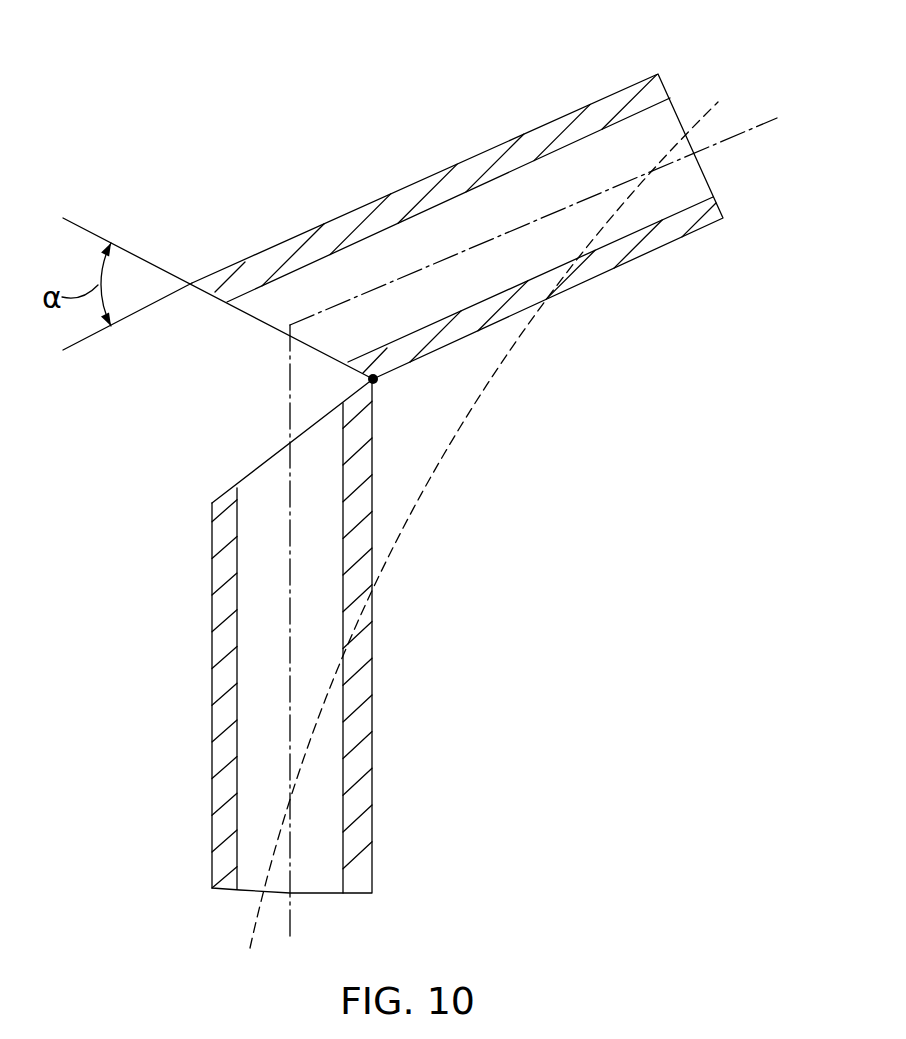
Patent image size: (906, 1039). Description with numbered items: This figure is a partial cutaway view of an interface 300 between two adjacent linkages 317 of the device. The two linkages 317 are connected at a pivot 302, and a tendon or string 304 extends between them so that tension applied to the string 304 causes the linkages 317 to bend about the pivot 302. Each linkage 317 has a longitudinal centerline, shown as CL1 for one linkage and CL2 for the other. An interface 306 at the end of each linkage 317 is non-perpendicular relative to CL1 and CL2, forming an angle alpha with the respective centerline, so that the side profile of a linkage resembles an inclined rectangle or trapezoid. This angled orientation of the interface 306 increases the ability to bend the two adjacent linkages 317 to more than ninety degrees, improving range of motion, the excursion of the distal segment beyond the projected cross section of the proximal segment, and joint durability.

The interface 300 is at (130, 408).
The pivot 302 is at (384, 392).
The tendon or string 304 is at (485, 395).
The interface 306 is at (216, 326).
The linkage 317 is at (532, 128).
The longitudinal centerline CL1 is at (723, 141).
The longitudinal centerline CL2 is at (295, 905).